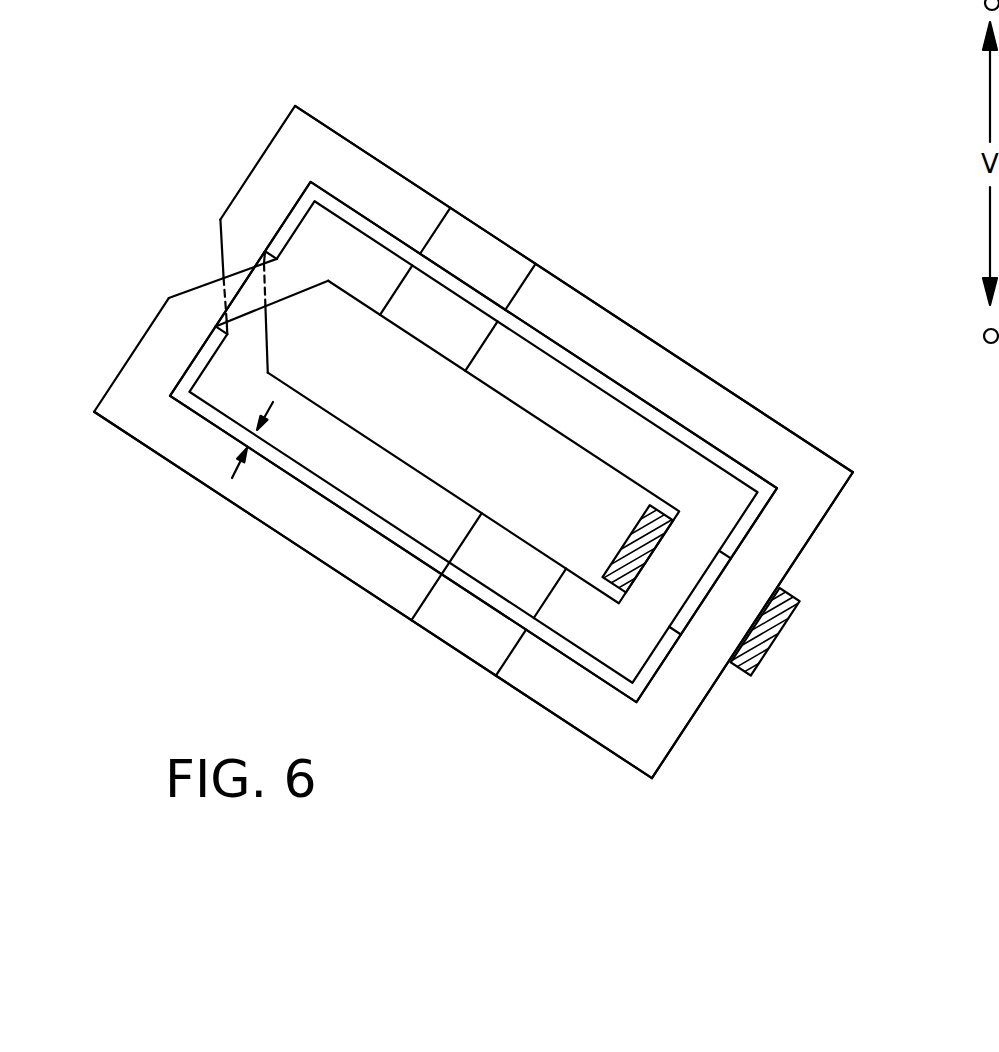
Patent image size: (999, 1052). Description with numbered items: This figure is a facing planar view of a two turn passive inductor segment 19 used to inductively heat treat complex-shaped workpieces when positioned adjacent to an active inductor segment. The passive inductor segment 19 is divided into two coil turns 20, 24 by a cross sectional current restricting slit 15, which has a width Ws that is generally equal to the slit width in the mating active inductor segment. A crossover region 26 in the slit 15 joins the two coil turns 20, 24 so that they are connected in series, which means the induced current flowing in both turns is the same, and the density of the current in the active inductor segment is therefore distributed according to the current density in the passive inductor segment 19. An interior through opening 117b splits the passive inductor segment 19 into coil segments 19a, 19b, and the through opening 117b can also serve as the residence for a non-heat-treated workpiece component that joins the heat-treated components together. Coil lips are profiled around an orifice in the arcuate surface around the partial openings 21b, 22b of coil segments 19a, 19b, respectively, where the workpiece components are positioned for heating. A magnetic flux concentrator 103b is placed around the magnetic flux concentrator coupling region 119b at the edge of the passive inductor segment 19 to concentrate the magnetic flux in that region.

The two turn passive inductor segment 19 is at (620, 92).
The coil segment 19a is at (306, 606).
The coil segment 19b is at (634, 261).
The magnetic flux concentrator coupling region 119b is at (855, 554).
The coil turn 24 is at (689, 384).
The coil turn 20 is at (700, 482).
The cross sectional current restricting slit 15 is at (588, 660).
The interior through opening 117b is at (500, 444).
The partial opening 22b is at (498, 240).
The partial opening 21b is at (451, 647).
The crossover region 26 is at (187, 260).
The magnetic flux concentrator 103b is at (770, 653).
The slit width Ws is at (269, 440).